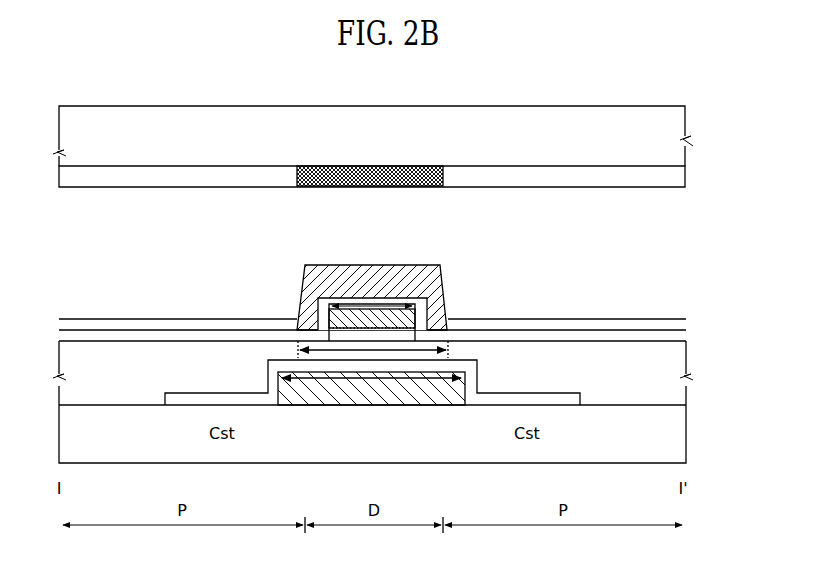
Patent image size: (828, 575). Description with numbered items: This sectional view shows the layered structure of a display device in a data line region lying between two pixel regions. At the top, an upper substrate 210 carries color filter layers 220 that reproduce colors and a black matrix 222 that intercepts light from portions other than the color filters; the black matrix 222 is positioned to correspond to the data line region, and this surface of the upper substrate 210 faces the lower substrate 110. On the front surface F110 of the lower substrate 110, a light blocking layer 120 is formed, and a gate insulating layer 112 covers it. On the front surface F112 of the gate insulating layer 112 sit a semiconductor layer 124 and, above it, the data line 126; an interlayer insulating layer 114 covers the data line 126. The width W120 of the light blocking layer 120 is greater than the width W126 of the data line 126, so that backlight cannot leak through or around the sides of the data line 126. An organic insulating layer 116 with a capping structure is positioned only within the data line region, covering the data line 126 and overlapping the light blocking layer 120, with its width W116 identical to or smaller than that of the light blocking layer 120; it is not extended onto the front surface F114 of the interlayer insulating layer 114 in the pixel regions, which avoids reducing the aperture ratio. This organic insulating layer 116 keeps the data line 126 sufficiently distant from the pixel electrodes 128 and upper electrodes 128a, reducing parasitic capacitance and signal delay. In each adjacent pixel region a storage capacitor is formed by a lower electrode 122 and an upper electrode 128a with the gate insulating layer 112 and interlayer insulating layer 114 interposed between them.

The upper substrate 210 is at (687, 140).
The color filter layers 220 is at (687, 172).
The black matrix 222 is at (357, 165).
The lower substrate 110 is at (688, 438).
The front surface of the lower substrate F110 is at (642, 404).
The gate insulating layer 112 is at (688, 376).
The light blocking layer 120 is at (420, 386).
The width of the light blocking layer W120 is at (338, 392).
The lower electrode 122 is at (500, 402).
The interlayer insulating layer 114 is at (688, 345).
The front surface of the interlayer insulating layer F114 is at (307, 322).
The width of the organic insulating layer W116 is at (404, 355).
The pixel electrodes 128 is at (688, 323).
The upper electrode 128a is at (212, 320).
The front surface of the gate insulating layer F112 is at (633, 337).
The semiconductor layer 124 is at (400, 282).
The organic insulating layer 116 is at (322, 296).
The data line 126 is at (366, 318).
The width of the data line W126 is at (398, 306).